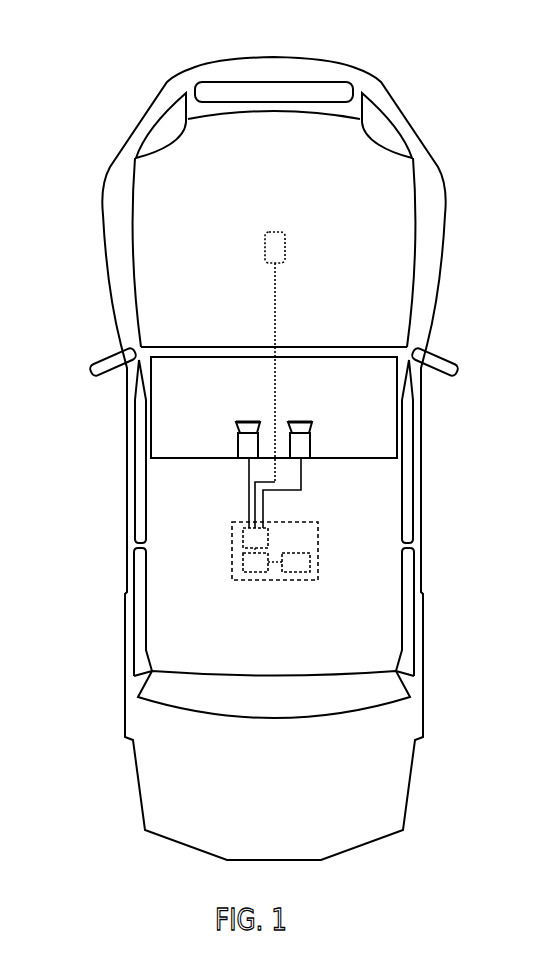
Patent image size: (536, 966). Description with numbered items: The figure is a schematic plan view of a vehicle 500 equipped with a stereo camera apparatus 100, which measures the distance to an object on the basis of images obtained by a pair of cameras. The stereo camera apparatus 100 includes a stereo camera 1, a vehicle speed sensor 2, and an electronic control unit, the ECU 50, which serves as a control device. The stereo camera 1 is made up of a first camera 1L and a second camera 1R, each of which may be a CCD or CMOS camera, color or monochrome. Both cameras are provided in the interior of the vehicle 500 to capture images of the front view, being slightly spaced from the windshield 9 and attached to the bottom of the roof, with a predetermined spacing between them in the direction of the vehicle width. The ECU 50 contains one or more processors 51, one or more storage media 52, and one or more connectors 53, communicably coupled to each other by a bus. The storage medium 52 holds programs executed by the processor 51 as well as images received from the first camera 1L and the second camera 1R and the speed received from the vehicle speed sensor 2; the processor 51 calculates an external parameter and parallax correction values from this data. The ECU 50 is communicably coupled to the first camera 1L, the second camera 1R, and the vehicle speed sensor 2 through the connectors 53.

The vehicle 500 is at (100, 68).
The windshield 9 is at (170, 412).
The vehicle speed sensor 2 is at (281, 231).
The stereo camera 1 is at (277, 411).
The first camera 1L is at (237, 447).
The second camera 1R is at (327, 422).
The stereo camera apparatus 100 is at (342, 541).
The electronic control unit (ECU) 50 is at (278, 573).
The processor 51 is at (243, 564).
The storage medium 52 is at (323, 565).
The connector 53 is at (243, 540).